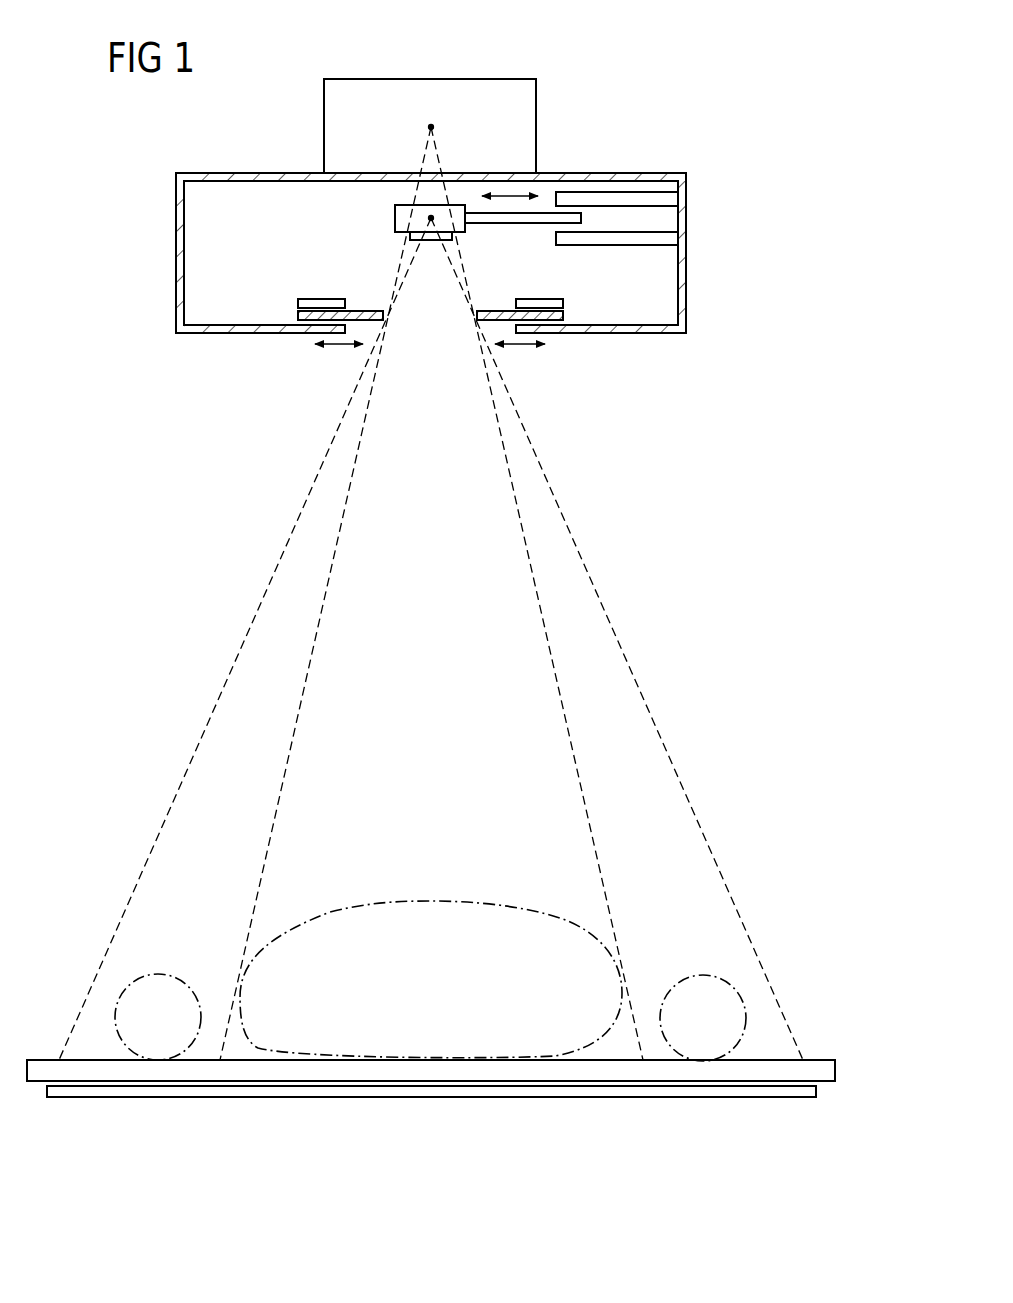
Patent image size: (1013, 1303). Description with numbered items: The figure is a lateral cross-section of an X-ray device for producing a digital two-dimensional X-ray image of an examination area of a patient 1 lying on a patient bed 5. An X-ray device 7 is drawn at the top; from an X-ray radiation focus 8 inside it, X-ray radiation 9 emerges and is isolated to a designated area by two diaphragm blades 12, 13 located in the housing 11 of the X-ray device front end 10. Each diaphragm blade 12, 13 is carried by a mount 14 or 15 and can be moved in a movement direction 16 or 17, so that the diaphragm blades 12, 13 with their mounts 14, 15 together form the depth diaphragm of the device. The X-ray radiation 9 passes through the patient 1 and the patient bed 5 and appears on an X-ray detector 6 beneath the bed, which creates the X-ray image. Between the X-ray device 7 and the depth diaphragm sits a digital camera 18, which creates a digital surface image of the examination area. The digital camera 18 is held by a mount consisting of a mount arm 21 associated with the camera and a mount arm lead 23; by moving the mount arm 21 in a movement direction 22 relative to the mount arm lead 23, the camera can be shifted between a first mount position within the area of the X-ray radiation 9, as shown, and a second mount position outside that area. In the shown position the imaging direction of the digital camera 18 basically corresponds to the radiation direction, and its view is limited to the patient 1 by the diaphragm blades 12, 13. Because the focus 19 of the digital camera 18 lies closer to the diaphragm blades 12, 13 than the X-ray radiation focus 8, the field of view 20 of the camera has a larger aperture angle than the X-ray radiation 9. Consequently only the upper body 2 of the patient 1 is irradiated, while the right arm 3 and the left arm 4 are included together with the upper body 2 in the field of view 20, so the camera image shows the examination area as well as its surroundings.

The patient 1 is at (430, 936).
The upper body 2 is at (368, 905).
The right arm 3 is at (157, 985).
The left arm 4 is at (703, 985).
The patient bed 5 is at (818, 1070).
The X-ray detector 6 is at (683, 1090).
The X-ray device 7 is at (548, 124).
The X-ray radiation focus 8 is at (428, 126).
The X-ray radiation 9 is at (430, 157).
The X-ray device front end 10 is at (496, 253).
The housing 11 is at (688, 315).
The diaphragm blade 12 is at (370, 311).
The diaphragm blade 13 is at (490, 311).
The mount 14 is at (305, 303).
The mount 15 is at (555, 303).
The movement direction 16 is at (338, 348).
The movement direction 17 is at (522, 348).
The digital camera 18 is at (374, 230).
The focus 19 is at (428, 217).
The field of view 20 is at (550, 518).
The mount arm 21 is at (525, 221).
The movement direction 22 is at (508, 193).
The mount arm lead 23 is at (670, 239).